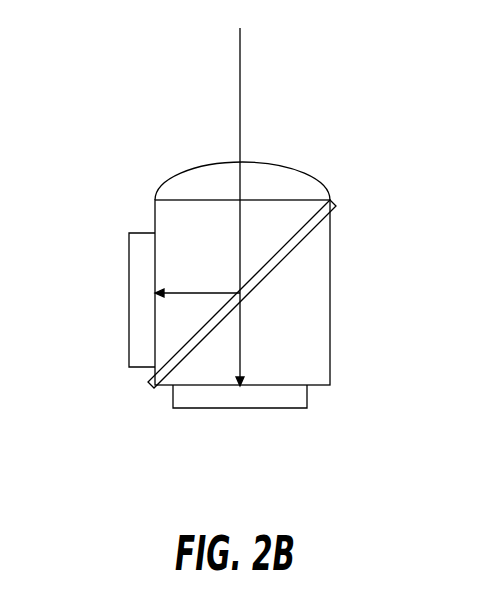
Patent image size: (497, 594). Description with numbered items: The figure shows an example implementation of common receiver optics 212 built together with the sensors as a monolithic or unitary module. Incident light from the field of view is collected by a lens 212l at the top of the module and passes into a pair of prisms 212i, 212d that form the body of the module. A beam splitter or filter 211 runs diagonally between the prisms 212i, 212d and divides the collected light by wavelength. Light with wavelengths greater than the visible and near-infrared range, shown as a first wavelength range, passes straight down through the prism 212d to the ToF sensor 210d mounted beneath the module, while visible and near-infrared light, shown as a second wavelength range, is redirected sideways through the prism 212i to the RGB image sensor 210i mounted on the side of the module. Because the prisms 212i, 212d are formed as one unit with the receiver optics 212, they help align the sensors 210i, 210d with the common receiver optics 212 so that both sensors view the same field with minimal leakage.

The receiver optics 212 is at (373, 395).
The lens 212l is at (313, 196).
The prism 212i is at (197, 254).
The prism 212d is at (312, 317).
The beam splitter or filter 211 is at (300, 243).
The RGB image sensor 210i is at (125, 332).
The ToF sensor 210d is at (258, 489).